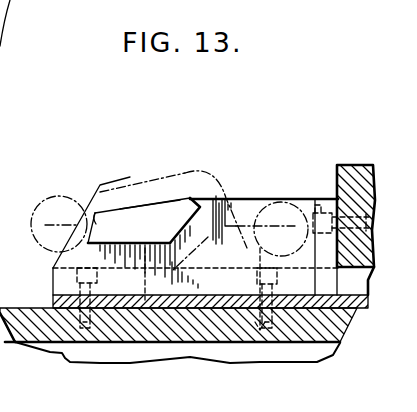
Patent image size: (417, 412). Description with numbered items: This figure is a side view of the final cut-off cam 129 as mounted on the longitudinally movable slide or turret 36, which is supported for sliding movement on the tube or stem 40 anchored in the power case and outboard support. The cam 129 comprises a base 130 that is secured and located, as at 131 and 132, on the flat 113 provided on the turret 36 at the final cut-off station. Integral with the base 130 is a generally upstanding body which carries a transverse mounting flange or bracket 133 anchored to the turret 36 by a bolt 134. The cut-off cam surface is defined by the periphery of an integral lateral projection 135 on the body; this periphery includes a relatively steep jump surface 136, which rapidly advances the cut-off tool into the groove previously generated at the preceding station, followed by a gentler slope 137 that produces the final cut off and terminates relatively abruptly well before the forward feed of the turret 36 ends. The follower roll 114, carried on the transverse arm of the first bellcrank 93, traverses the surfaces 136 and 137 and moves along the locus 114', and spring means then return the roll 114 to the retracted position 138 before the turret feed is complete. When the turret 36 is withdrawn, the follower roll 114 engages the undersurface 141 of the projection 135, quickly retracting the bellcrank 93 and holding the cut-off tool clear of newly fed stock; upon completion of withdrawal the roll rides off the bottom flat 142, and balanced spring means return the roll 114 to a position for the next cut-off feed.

The longitudinally movable slide 36 is at (353, 170).
The tube or stem 40 is at (10, 345).
The first bellcrank 93 is at (6, 54).
The flat 113 is at (56, 294).
The follower roll 114 is at (80, 219).
The locus of follower roll 114' is at (142, 169).
The final cut-off cam 129 is at (245, 204).
The base 130 is at (205, 271).
The securing and locating means 131 is at (89, 289).
The securing and locating means 132 is at (146, 291).
The transverse mounting flange or bracket 133 is at (323, 204).
The bolt 134 is at (320, 210).
The integral lateral projection 135 is at (146, 212).
The jump surface 136 is at (100, 222).
The gentler slope 137 is at (172, 186).
The retracted position 138 is at (296, 257).
The undersurface 141 is at (178, 229).
The bottom flat 142 is at (95, 241).